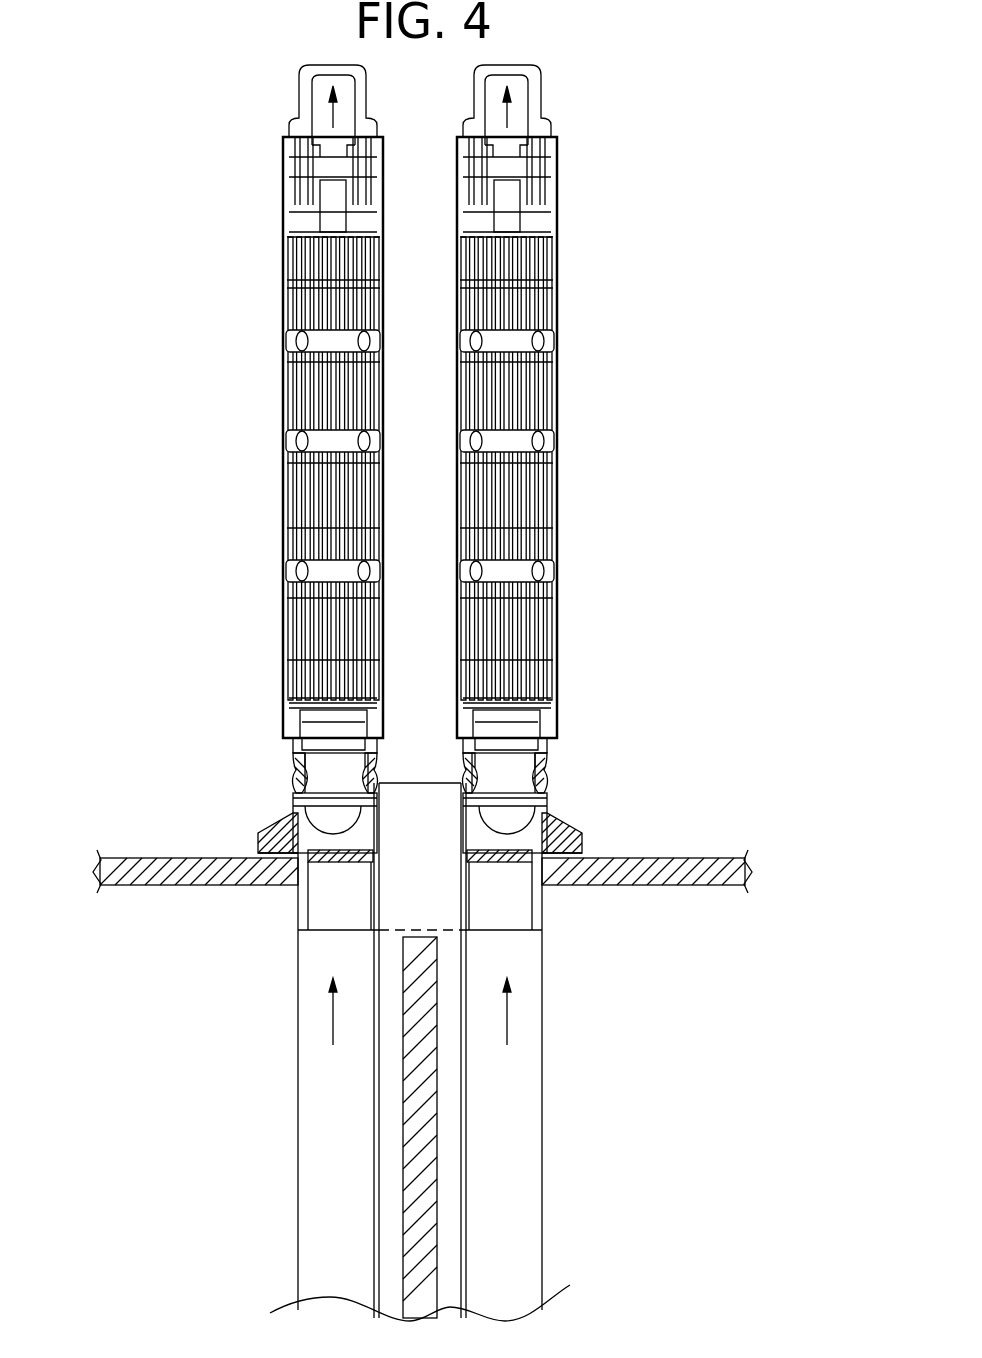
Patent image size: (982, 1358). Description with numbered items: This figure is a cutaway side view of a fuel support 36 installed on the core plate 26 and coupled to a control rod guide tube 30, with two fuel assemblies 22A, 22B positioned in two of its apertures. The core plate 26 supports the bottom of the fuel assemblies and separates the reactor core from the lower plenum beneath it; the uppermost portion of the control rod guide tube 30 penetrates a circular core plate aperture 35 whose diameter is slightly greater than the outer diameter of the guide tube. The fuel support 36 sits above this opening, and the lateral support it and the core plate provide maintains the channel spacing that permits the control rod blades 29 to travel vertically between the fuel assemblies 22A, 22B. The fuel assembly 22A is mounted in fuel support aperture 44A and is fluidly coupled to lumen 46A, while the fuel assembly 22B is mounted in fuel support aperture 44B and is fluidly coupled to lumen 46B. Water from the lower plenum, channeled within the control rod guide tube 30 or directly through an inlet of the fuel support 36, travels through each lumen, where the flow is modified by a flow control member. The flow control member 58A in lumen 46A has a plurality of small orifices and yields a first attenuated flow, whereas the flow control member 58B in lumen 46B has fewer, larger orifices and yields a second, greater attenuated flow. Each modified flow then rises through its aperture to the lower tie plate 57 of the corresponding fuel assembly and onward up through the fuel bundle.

The fuel assembly 22A is at (283, 296).
The fuel assembly 22B is at (556, 300).
The core plate 26 is at (130, 860).
The control rod blades 29 is at (423, 1143).
The control rod guide tube 30 is at (543, 1195).
The core plate aperture 35 is at (262, 826).
The fuel support 36 is at (262, 827).
The fuel support aperture 44A is at (293, 885).
The fuel support aperture 44B is at (547, 815).
The lumen 46A is at (338, 920).
The lumen 46B is at (510, 900).
The lower tie plate 57 is at (293, 772).
The flow control member 58A is at (306, 862).
The flow control member 58B is at (534, 855).